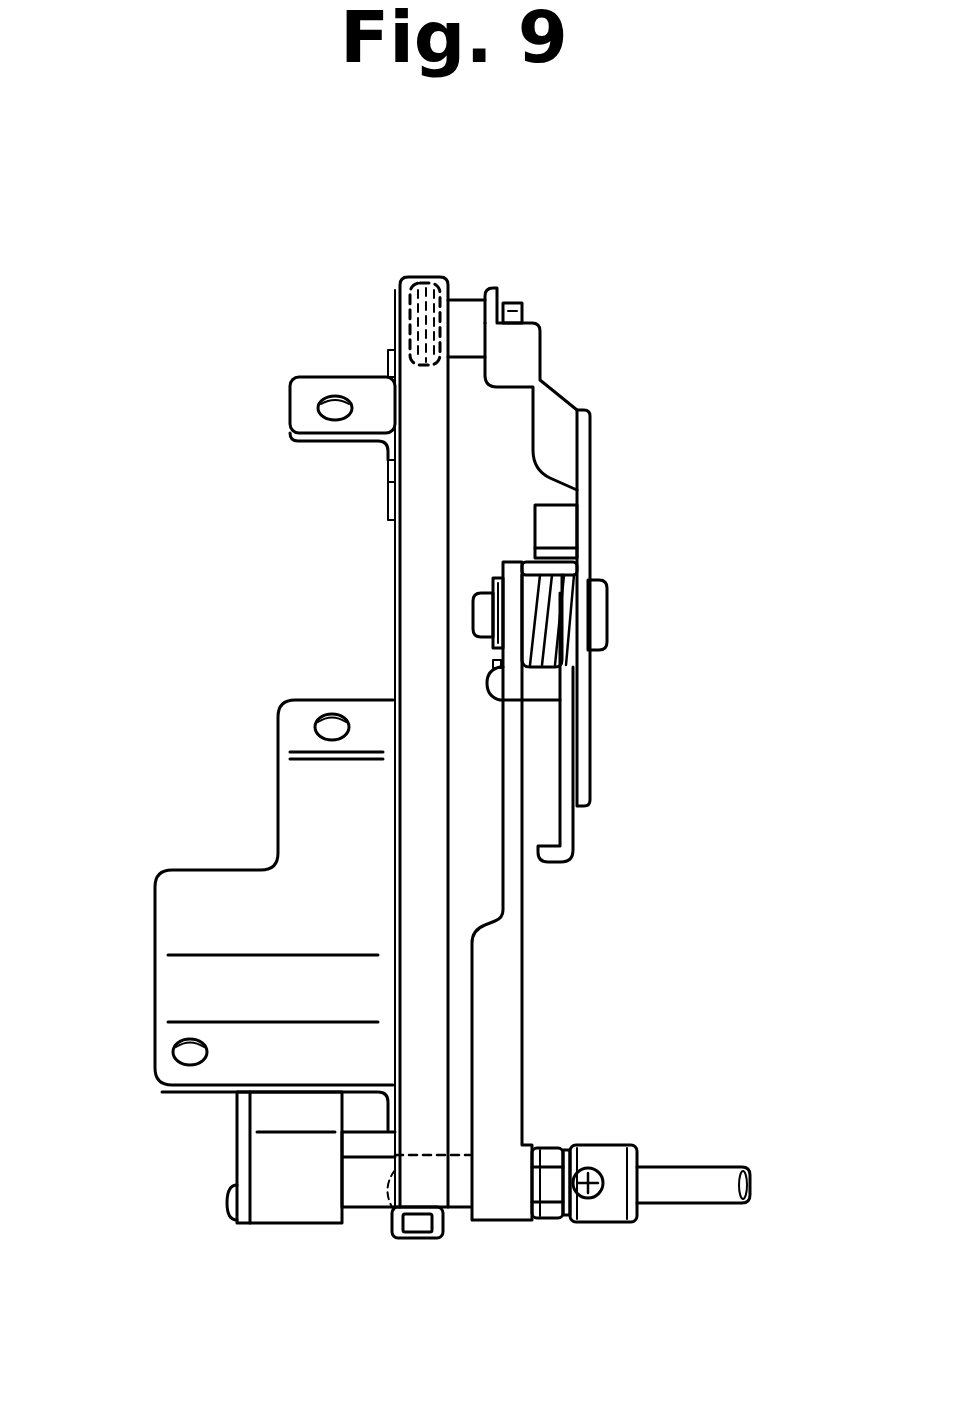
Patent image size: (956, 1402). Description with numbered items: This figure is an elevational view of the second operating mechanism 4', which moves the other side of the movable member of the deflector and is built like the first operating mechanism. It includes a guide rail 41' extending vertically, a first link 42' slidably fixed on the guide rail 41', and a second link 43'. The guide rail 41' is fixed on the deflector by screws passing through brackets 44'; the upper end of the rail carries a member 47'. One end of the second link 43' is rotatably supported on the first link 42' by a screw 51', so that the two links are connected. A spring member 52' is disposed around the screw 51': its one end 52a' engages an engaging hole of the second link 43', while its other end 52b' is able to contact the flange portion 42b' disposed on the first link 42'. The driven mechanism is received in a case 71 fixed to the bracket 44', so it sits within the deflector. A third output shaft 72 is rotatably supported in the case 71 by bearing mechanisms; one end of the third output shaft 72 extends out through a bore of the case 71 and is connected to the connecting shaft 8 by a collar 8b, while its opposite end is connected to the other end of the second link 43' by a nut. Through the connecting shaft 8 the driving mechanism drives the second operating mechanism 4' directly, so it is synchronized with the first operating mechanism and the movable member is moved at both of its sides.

The guide rail 41' is at (371, 757).
The knob 47' is at (462, 277).
The bracket 44' is at (270, 719).
The first link 42' is at (581, 547).
The flange portion 42b' is at (642, 488).
The spring member 52' is at (622, 583).
The screw 51' is at (615, 617).
The second operating mechanism 4' is at (704, 568).
The one end of the spring member 52a' is at (622, 701).
The other end of the spring member 52b' is at (648, 727).
The second link 43' is at (567, 891).
The case 71 is at (262, 1167).
The third output shaft 72 is at (363, 1195).
The collar 8b is at (603, 1213).
The connecting shaft 8 is at (705, 1193).